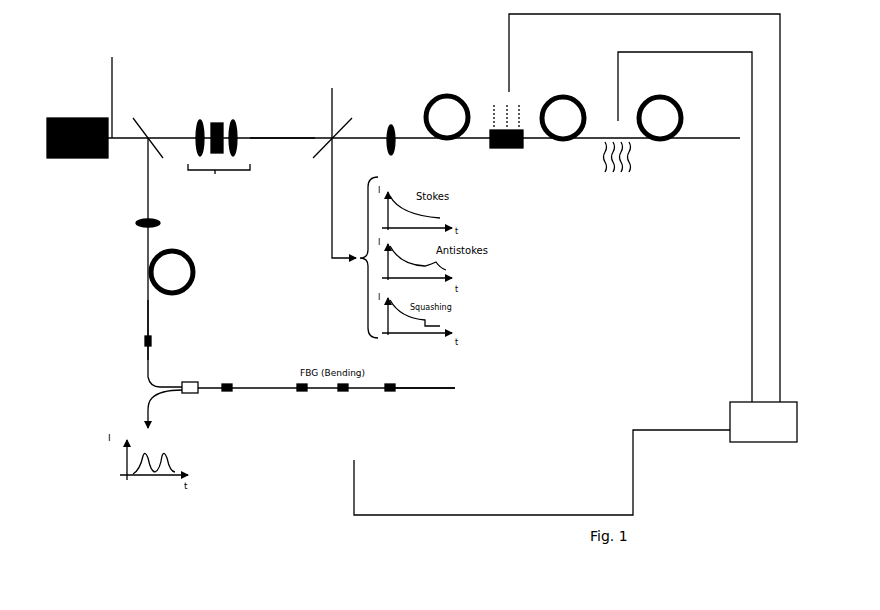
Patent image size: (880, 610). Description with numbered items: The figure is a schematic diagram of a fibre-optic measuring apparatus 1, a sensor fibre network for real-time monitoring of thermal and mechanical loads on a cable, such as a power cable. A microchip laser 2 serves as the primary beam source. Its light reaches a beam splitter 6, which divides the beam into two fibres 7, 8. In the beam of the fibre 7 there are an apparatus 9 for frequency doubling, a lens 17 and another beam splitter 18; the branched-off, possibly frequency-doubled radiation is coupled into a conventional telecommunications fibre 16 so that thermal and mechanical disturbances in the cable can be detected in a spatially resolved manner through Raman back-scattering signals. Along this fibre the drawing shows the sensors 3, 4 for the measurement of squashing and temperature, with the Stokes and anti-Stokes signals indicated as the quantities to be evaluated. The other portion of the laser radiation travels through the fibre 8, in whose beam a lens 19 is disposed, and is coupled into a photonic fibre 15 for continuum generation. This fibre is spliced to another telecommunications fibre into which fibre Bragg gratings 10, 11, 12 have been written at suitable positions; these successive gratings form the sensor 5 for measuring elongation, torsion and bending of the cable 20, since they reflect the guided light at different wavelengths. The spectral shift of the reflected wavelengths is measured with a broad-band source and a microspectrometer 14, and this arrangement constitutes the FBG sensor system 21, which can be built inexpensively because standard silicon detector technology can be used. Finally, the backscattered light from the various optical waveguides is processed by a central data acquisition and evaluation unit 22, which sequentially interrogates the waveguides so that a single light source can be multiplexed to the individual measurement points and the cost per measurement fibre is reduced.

The fibre-optic measuring apparatus 1 is at (562, 298).
The laser 2 is at (67, 116).
The sensor 3 is at (526, 104).
The sensor 4 is at (623, 124).
The sensor 5 is at (352, 407).
The beam splitter 6 is at (139, 103).
The fibre 7 is at (282, 136).
The fibre 8 is at (140, 322).
The apparatus for frequency doubling 9 is at (215, 118).
The fibre Bragg grating 10 is at (300, 396).
The fibre Bragg grating 11 is at (342, 396).
The fibre Bragg grating 12 is at (388, 396).
The microspectrometer 14 is at (196, 410).
The photonic fibre 15 is at (194, 272).
The telecommunications fibre 16 is at (446, 144).
The lens 17 is at (390, 124).
The beam splitter 18 is at (334, 164).
The lens 19 is at (134, 223).
The cable 20 is at (111, 89).
The FBG sensor system 21 is at (802, 242).
The central data acquisition and evaluation unit 22 is at (763, 422).